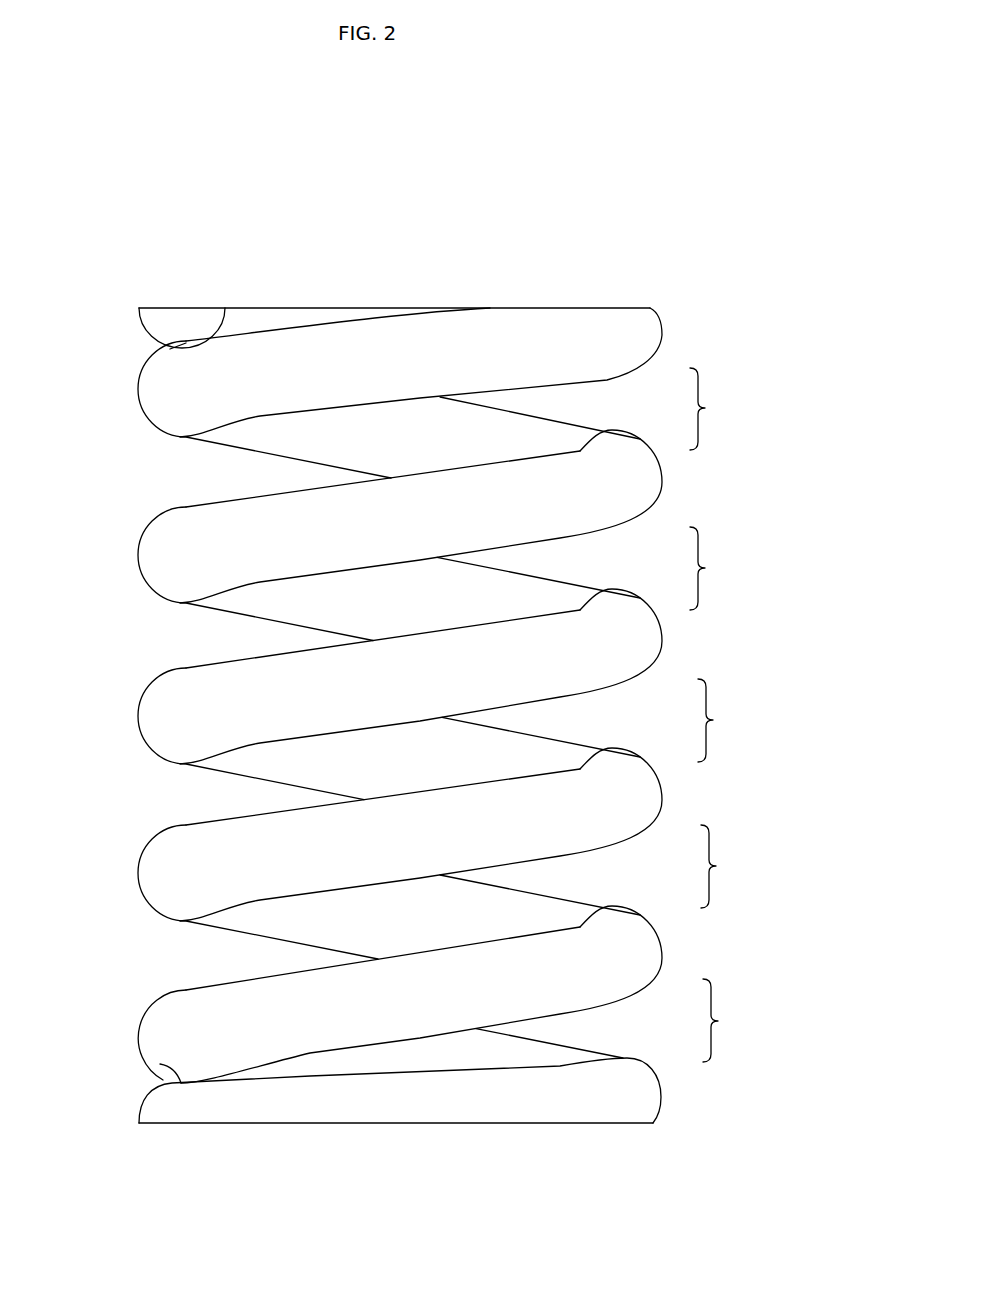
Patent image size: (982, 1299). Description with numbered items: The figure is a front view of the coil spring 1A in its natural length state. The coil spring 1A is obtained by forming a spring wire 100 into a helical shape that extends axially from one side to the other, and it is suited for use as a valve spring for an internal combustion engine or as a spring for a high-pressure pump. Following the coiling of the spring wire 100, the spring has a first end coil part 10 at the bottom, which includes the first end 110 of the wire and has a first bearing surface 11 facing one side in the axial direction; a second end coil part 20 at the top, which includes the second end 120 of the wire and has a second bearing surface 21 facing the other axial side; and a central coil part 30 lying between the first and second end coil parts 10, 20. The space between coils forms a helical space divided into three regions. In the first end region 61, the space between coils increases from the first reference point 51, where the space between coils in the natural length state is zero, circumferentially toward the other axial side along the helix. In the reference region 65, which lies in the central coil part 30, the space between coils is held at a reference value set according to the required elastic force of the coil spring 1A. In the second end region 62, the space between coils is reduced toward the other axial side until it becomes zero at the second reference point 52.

The coil spring 1A is at (615, 235).
The second end coil part 20 is at (704, 340).
The second bearing surface 21 is at (277, 306).
The second end 120 is at (177, 318).
The second reference point 52 is at (170, 349).
The spring wire 100 is at (160, 560).
The central coil part 30 is at (740, 658).
The second end region 62 is at (712, 409).
The reference region 65 is at (717, 717).
The first end region 61 is at (726, 1020).
The first end coil part 10 is at (706, 1108).
The first bearing surface 11 is at (468, 1126).
The first end 110 is at (208, 1112).
The first reference point 51 is at (160, 1064).